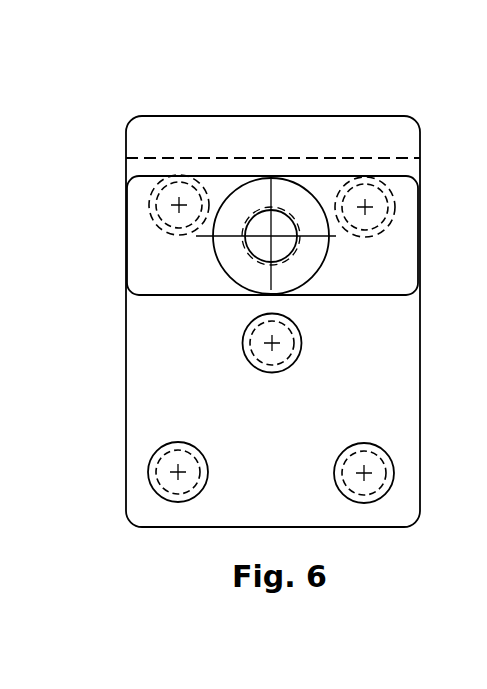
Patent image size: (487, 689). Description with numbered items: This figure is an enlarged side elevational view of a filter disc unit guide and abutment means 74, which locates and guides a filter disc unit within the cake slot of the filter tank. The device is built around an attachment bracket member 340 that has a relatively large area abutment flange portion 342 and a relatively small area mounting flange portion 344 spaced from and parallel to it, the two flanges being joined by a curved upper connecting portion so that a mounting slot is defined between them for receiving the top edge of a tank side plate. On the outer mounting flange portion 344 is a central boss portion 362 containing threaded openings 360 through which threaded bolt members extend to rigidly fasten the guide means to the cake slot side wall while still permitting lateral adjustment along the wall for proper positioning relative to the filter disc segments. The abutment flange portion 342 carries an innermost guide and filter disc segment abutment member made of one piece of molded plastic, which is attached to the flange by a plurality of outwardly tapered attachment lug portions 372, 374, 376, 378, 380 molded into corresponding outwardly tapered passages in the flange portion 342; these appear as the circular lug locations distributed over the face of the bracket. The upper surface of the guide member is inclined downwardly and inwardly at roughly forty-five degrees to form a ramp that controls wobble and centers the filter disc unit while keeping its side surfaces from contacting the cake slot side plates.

The attachment bracket member 340 is at (128, 110).
The filter disc unit guide and abutment means 74 is at (345, 110).
The abutment flange portion 342 is at (388, 387).
The mounting flange portion 344 is at (408, 260).
The threaded openings 360 is at (247, 246).
The central boss portion 362 is at (290, 270).
The attachment lug portion 372 is at (152, 222).
The attachment lug portion 374 is at (388, 222).
The attachment lug portion 376 is at (256, 363).
The attachment lug portion 378 is at (203, 488).
The attachment lug portion 380 is at (335, 467).